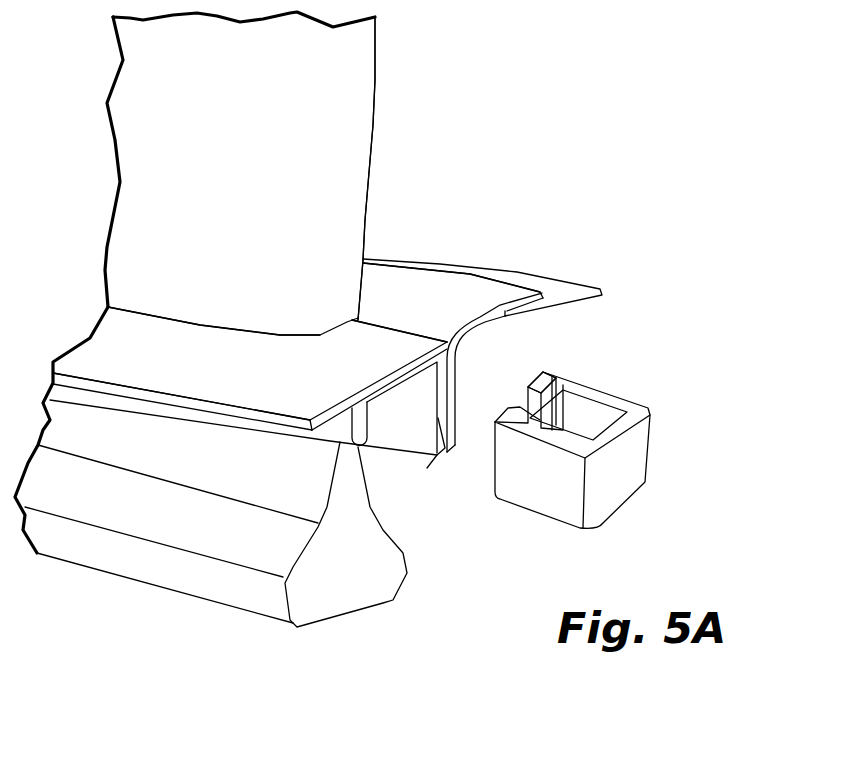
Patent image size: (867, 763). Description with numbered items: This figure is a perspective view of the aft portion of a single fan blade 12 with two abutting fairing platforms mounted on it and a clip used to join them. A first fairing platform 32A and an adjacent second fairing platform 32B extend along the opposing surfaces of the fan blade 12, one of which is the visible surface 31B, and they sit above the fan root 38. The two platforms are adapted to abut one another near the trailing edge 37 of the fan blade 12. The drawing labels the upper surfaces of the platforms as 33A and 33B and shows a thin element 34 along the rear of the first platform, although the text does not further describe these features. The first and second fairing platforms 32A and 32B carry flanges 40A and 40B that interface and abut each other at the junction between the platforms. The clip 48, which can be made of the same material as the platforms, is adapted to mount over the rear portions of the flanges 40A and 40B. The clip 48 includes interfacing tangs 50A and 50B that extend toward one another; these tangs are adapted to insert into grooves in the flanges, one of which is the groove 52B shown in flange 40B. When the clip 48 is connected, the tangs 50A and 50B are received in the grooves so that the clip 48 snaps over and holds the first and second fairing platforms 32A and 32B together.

The fan blade 12 is at (352, 70).
The trailing edge 37 is at (373, 125).
The surface 31B is at (189, 162).
The first fairing platform 32A is at (462, 290).
The second fairing platform 32B is at (176, 358).
The platform top surface 33A is at (446, 302).
The platform top surface 33B is at (186, 363).
The seal plate 34 is at (557, 287).
The flange 40A is at (453, 410).
The flange 40B is at (433, 445).
The groove 52B is at (350, 428).
The fan root 38 is at (345, 588).
The clip 48 is at (611, 423).
The tang 50A is at (547, 385).
The tang 50B is at (513, 418).